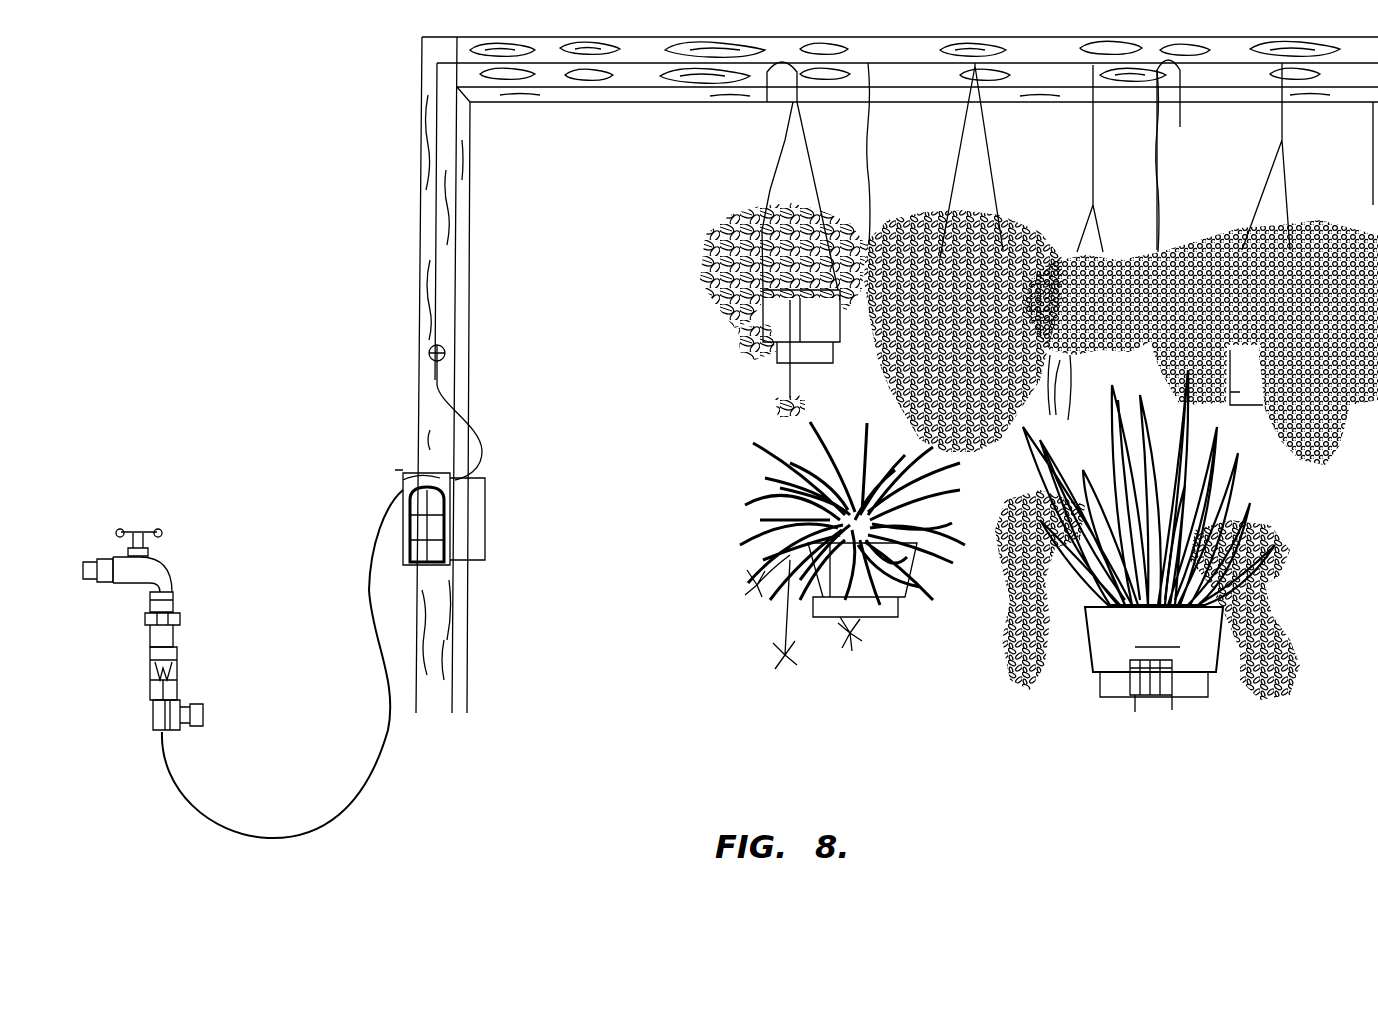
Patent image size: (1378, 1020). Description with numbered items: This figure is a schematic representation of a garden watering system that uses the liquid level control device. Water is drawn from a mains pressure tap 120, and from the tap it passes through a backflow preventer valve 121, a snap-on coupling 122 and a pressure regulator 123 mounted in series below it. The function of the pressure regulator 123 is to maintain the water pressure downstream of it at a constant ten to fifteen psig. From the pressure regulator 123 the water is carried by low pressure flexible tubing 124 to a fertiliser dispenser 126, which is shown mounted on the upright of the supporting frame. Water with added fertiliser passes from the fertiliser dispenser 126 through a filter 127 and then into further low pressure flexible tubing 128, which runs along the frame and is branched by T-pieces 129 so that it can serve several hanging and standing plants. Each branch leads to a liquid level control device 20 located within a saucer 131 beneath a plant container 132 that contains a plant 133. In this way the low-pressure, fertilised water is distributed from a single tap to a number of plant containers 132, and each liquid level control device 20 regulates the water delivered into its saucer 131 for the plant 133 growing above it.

The liquid level control device 20 is at (1135, 712).
The mains pressure tap 120 is at (140, 547).
The backflow preventer valve 121 is at (165, 605).
The snap-on coupling 122 is at (165, 665).
The pressure regulator 123 is at (205, 715).
The low pressure flexible tubing 124 is at (385, 667).
The fertiliser dispenser 126 is at (403, 517).
The filter 127 is at (445, 353).
The low pressure flexible tubing 128 is at (437, 147).
The T-pieces 129 is at (768, 78).
The saucers 131 is at (1100, 680).
The plant containers 132 is at (1154, 639).
The plants 133 is at (1262, 553).